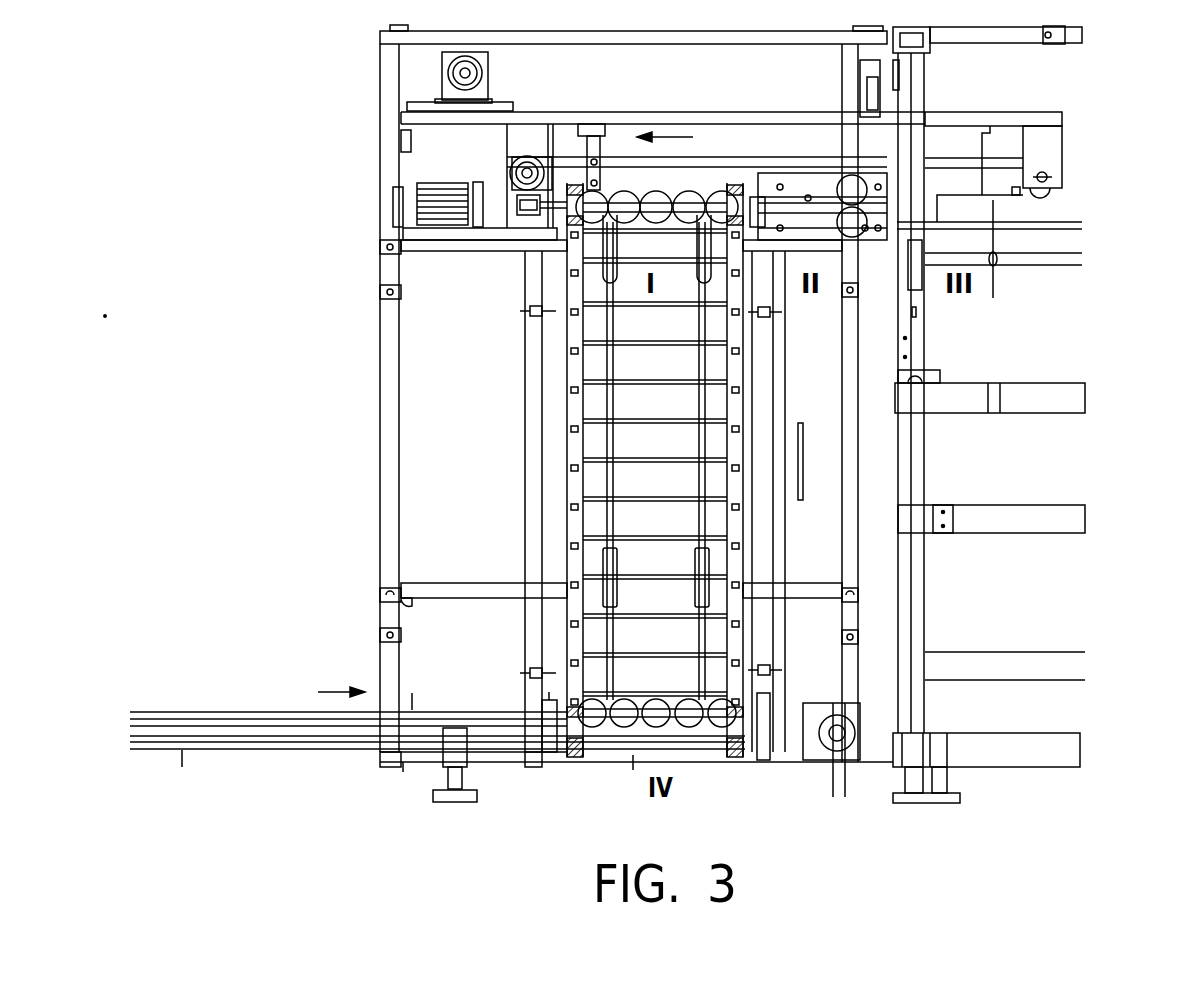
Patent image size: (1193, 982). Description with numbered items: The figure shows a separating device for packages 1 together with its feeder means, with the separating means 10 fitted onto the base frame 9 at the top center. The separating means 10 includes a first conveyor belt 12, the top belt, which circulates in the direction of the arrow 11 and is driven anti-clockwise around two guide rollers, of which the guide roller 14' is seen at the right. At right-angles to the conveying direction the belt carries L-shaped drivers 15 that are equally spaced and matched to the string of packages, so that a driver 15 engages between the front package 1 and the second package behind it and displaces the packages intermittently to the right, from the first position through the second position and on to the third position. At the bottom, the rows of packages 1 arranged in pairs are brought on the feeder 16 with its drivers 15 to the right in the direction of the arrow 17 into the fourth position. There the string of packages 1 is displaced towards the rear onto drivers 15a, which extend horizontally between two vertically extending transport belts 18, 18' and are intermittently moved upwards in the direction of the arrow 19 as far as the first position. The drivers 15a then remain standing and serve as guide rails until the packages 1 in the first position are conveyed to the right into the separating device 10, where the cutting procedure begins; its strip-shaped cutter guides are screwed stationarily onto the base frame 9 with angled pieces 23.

The package 1 is at (583, 245).
The base frame 9 is at (380, 540).
The separating means 10 is at (795, 167).
The arrow 11 is at (672, 137).
The first conveyor belt 12 is at (548, 172).
The guide roller 14' is at (1049, 167).
The L-shaped driver 15 is at (723, 157).
The driver 15a is at (635, 420).
The feeder 16 is at (263, 712).
The arrow 17 is at (333, 690).
The transport belt 18 is at (515, 470).
The transport belt 18' is at (781, 470).
The arrow 19 is at (803, 457).
The angled piece 23 is at (840, 147).